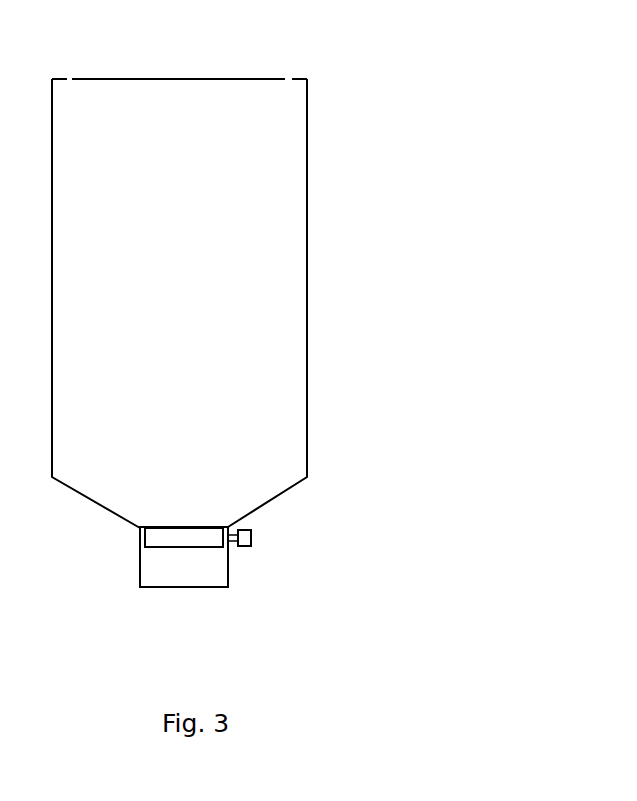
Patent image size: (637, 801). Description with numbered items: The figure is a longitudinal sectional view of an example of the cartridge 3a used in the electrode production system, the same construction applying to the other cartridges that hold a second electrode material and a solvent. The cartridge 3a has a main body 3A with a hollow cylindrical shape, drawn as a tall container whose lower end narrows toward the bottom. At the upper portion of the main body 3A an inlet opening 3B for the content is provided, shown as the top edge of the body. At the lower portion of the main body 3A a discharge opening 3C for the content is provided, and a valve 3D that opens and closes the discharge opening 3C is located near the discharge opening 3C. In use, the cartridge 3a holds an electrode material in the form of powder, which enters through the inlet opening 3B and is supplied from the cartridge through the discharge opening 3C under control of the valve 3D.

The main body 3A is at (307, 290).
The inlet opening 3B is at (175, 79).
The cartridge 3a is at (338, 160).
The discharge opening 3C is at (180, 587).
The valve 3D is at (173, 535).